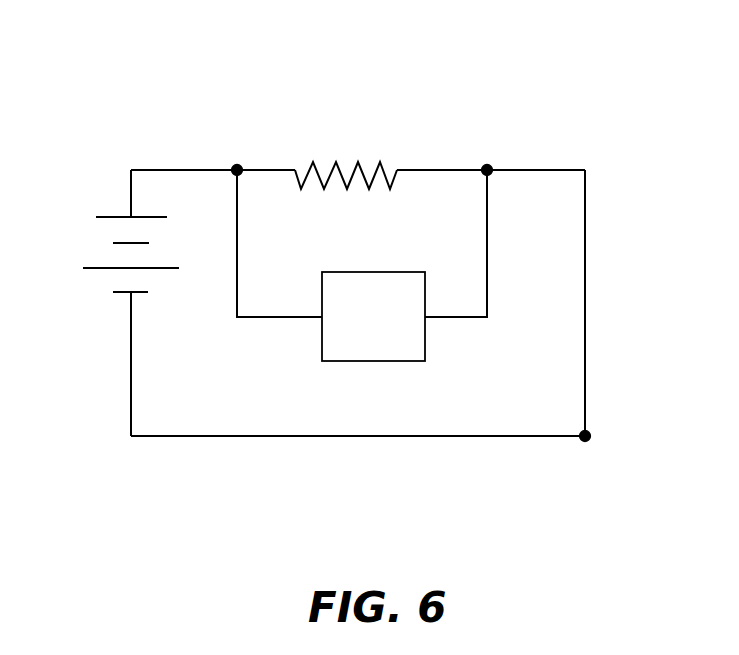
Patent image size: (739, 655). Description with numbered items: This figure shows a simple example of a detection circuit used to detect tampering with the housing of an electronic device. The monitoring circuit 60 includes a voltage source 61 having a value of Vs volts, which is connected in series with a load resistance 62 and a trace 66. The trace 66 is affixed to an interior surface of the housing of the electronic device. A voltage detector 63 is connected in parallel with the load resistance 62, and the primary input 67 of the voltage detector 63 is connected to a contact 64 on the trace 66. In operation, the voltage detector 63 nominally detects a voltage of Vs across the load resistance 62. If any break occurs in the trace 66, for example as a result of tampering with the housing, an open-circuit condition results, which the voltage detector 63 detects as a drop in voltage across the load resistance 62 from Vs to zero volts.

The monitoring circuit 60 is at (587, 66).
The voltage source 61 is at (104, 268).
The resistance 62 is at (359, 171).
The voltage detector 63 is at (375, 361).
The contact 64 is at (487, 168).
The trace 66 is at (585, 255).
The primary input 67 is at (489, 273).